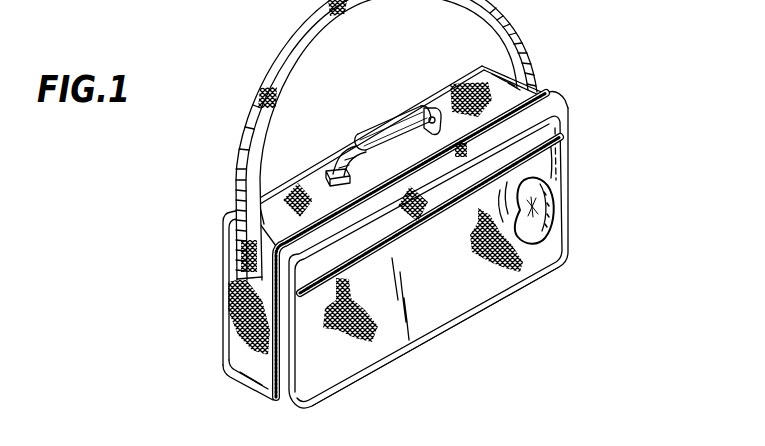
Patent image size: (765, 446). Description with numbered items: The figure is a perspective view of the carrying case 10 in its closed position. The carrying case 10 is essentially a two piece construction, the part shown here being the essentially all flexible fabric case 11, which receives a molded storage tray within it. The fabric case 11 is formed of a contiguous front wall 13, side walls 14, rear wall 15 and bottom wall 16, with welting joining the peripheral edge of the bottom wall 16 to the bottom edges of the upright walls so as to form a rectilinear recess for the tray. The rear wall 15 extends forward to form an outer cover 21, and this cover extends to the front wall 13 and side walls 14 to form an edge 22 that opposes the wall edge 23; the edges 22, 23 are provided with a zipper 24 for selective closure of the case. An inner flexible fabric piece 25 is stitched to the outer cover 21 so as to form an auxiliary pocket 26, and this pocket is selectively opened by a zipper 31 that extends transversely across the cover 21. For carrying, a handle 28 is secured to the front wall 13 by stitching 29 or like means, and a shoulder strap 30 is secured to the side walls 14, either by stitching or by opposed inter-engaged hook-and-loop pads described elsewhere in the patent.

The carrying case 10 is at (572, 80).
The flexible fabric case 11 is at (330, 401).
The front wall 13 is at (318, 172).
The side walls 14 is at (538, 93).
The rear wall 15 is at (444, 81).
The bottom wall 16 is at (422, 344).
The outer cover 21 is at (565, 99).
The edge 22 is at (301, 233).
The wall edge 23 is at (335, 230).
The zipper 24 is at (426, 104).
The inner flexible fabric piece 25 is at (476, 298).
The auxiliary pocket 26 is at (553, 228).
The handle 28 is at (388, 127).
The stitching 29 is at (329, 171).
The shoulder strap 30 is at (290, 48).
The zipper 31 is at (246, 256).